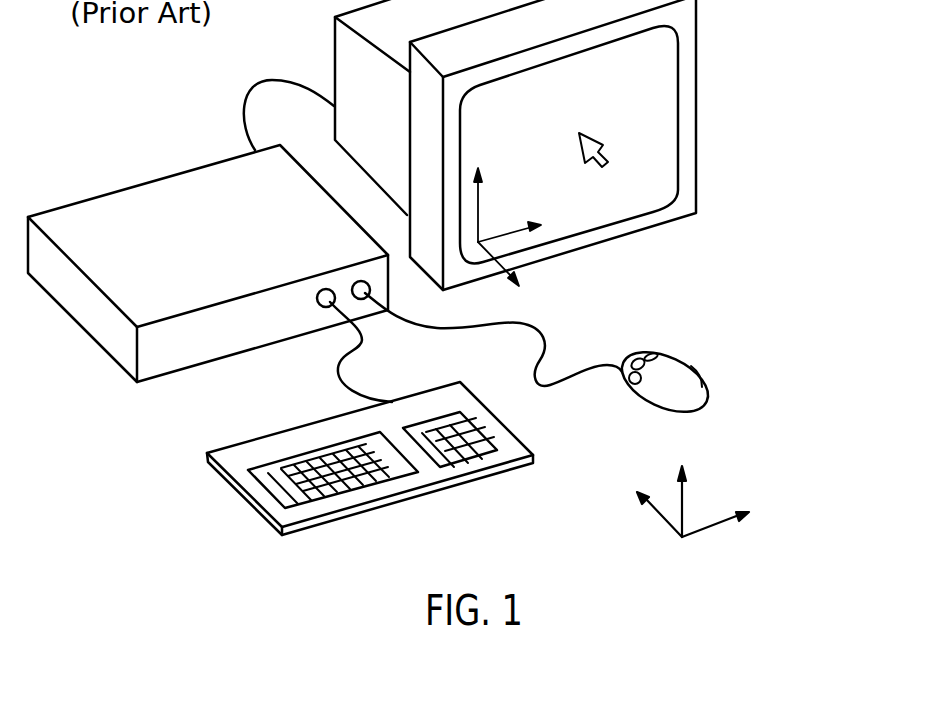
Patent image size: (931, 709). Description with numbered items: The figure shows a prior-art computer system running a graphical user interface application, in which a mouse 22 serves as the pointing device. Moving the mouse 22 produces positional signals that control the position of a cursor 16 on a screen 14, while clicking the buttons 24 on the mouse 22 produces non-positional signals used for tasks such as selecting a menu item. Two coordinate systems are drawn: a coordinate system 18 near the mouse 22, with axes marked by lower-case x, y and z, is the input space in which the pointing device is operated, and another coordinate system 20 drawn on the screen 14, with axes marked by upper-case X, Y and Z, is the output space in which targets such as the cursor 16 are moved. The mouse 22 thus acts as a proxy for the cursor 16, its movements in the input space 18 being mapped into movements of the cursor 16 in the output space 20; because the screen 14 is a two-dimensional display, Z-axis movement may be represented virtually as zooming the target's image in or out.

The screen 14 is at (655, 55).
The cursor 16 is at (603, 153).
The coordinate system 18 is at (708, 500).
The coordinate system 20 is at (503, 240).
The mouse 22 is at (682, 365).
The buttons 24 is at (628, 383).